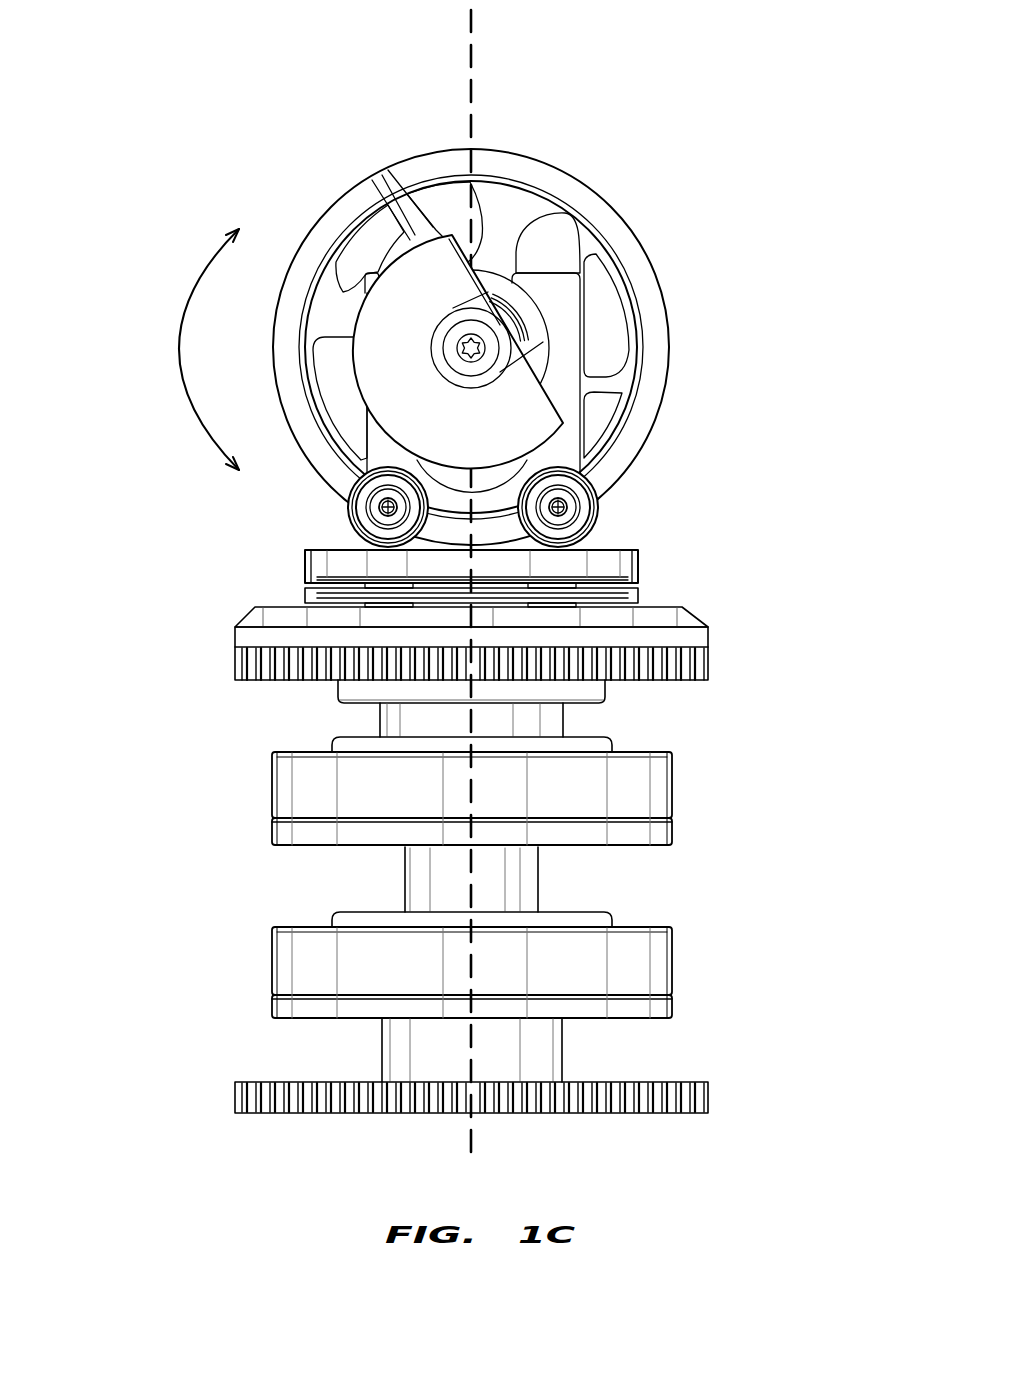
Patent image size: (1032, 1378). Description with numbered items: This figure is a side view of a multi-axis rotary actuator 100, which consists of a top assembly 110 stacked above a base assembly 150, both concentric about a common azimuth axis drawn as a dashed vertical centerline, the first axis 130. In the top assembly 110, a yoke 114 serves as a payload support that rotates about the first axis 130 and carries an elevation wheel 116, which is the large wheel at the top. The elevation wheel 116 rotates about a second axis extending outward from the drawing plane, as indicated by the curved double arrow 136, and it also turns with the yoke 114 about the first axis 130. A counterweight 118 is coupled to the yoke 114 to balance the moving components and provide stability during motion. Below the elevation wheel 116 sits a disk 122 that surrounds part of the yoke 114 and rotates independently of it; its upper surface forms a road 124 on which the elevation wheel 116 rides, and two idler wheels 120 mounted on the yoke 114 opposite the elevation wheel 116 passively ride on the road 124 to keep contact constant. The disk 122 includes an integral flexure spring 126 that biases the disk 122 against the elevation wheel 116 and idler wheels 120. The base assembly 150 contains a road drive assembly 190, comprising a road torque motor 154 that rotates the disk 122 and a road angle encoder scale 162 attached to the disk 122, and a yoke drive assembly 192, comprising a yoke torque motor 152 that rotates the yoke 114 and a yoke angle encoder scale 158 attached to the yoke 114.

The multi-axis rotary actuator 100 is at (626, 123).
The top assembly 110 is at (142, 147).
The yoke 114 is at (580, 272).
The elevation wheel 116 is at (663, 279).
The counterweight 118 is at (381, 272).
The idler wheel 120 is at (352, 514).
The disk 122 is at (637, 577).
The road 124 is at (638, 550).
The integral flexure spring 126 is at (625, 596).
The first axis 130 is at (470, 68).
The rotation of the elevation wheel about the second axis 136 is at (206, 270).
The base assembly 150 is at (145, 616).
The yoke torque motor 152 is at (672, 955).
The road torque motor 154 is at (672, 773).
The yoke angle encoder scale 158 is at (708, 1093).
The road angle encoder scale 162 is at (708, 660).
The road drive assembly 190 is at (800, 615).
The yoke drive assembly 192 is at (800, 910).